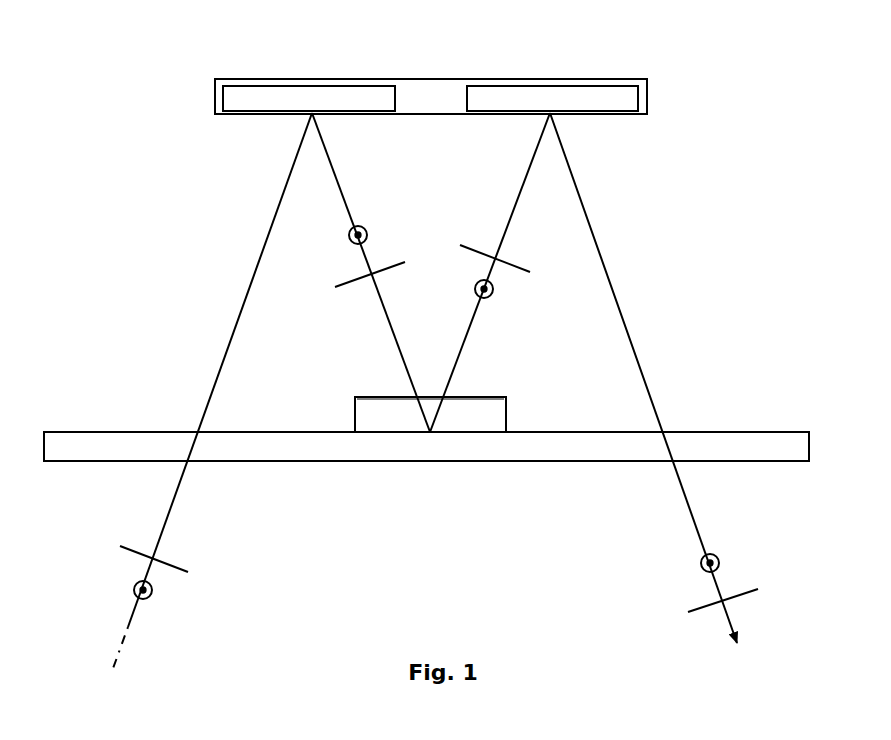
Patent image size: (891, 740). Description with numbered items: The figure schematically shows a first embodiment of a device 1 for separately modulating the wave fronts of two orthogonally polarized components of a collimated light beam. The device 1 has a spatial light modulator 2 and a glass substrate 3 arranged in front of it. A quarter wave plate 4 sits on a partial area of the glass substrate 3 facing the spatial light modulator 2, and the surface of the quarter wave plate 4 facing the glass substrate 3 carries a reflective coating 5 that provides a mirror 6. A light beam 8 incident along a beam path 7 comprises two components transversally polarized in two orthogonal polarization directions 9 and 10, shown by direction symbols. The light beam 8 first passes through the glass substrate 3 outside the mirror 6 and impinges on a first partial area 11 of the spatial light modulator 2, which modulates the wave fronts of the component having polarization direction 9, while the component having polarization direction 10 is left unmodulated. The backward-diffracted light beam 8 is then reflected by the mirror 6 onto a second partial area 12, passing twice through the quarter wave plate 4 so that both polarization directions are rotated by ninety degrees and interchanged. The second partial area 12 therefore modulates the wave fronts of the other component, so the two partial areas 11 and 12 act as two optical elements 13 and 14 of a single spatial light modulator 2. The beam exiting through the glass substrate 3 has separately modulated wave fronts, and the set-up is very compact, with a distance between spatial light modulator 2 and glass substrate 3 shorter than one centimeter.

The device 1 is at (682, 188).
The spatial light modulator 2 is at (438, 106).
The glass substrate 3 is at (812, 442).
The quarter wave plate 4 is at (506, 418).
The reflective coating 5 is at (465, 433).
The mirror 6 is at (387, 428).
The beam path 7 is at (122, 647).
The light beam 8 is at (343, 190).
The polarization direction 9 is at (348, 240).
The polarization direction 10 is at (408, 252).
The first partial area 11 is at (288, 137).
The second partial area 12 is at (567, 136).
The optical element 13 is at (245, 118).
The optical element 14 is at (612, 117).